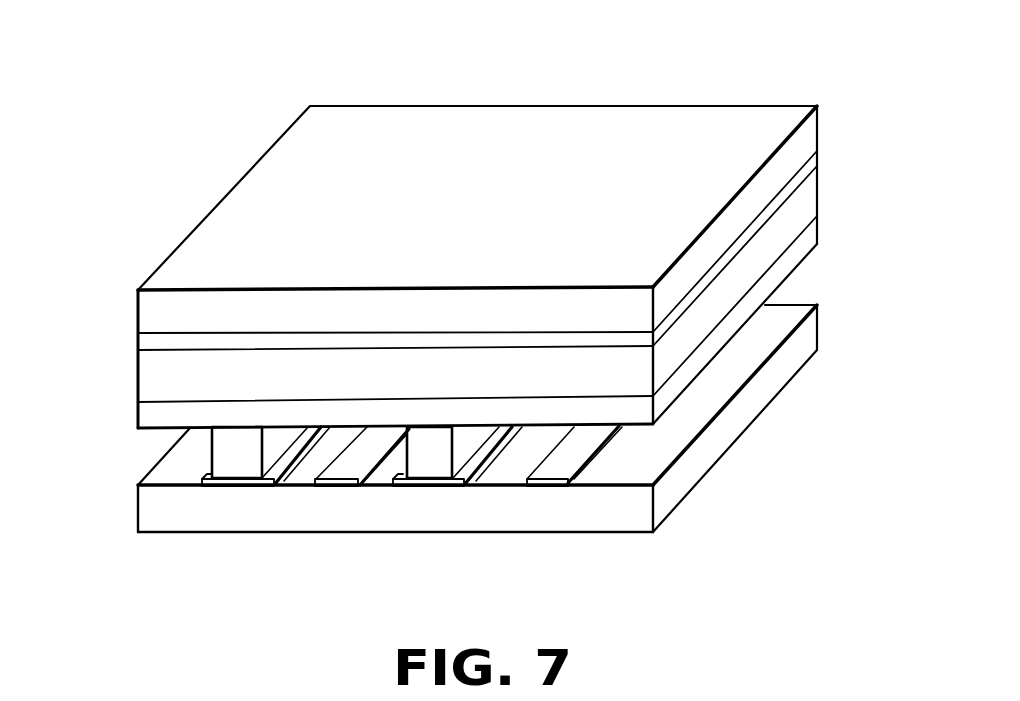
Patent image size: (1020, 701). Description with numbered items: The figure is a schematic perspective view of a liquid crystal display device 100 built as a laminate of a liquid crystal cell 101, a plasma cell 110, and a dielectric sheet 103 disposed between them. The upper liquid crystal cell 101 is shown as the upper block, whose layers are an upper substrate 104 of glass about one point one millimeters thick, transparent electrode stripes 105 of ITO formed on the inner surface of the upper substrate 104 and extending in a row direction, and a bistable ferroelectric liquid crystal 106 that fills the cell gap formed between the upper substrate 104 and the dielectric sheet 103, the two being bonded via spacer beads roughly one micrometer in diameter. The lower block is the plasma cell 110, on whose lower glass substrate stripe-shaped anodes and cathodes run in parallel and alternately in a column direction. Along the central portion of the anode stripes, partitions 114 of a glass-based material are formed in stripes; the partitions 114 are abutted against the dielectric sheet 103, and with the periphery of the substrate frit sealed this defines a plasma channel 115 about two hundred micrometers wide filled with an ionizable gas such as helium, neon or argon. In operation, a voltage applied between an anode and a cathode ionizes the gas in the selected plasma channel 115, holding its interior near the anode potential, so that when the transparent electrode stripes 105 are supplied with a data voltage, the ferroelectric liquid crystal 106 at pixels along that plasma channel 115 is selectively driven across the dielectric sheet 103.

The liquid crystal display device 100 is at (519, 98).
The liquid crystal cell 101 is at (125, 359).
The dielectric sheet 103 is at (808, 244).
The upper substrate 104 is at (808, 138).
The transparent electrode stripes 105 is at (808, 170).
The bistable ferroelectric liquid crystal 106 is at (808, 204).
The plasma cell 110 is at (128, 473).
The partitions 114 is at (422, 458).
The plasma channel 115 is at (795, 288).